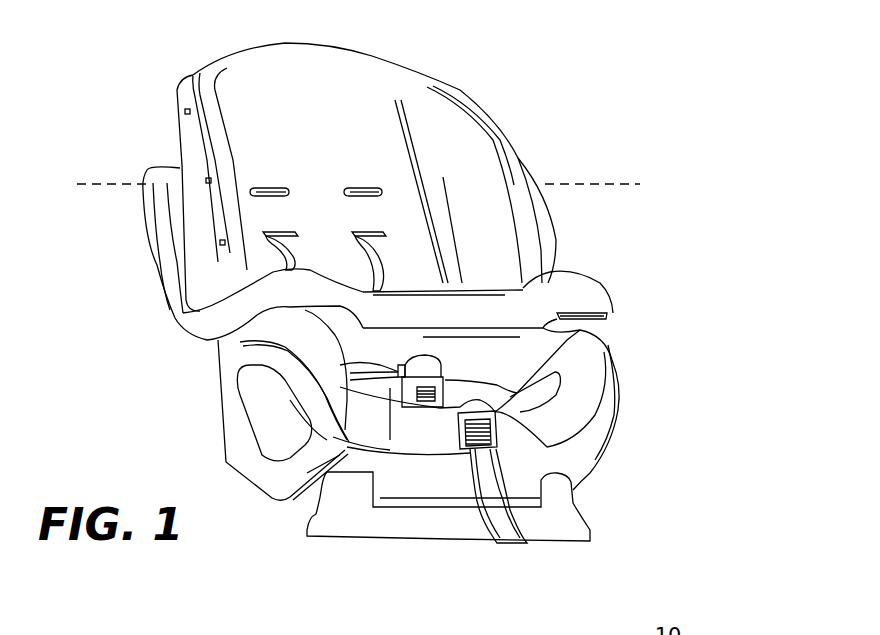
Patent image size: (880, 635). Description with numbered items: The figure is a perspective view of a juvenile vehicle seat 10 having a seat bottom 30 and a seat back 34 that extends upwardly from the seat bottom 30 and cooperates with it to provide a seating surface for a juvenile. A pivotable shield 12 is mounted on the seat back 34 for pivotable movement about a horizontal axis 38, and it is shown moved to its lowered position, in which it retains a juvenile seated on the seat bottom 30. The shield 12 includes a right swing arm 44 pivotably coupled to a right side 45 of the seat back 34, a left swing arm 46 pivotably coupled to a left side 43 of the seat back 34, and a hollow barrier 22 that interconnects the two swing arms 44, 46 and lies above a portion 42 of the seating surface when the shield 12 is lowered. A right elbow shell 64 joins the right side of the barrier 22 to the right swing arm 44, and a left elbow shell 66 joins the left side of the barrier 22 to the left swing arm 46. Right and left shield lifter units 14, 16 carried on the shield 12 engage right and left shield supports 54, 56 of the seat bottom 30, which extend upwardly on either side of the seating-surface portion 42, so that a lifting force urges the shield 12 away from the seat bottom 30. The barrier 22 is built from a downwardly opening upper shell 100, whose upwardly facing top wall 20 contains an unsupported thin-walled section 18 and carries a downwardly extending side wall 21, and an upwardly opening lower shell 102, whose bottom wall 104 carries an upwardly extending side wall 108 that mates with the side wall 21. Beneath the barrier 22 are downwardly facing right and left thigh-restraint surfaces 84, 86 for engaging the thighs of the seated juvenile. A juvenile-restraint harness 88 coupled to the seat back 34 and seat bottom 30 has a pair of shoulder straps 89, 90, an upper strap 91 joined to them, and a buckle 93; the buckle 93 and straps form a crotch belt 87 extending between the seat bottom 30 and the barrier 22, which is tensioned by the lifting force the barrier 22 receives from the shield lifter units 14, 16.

The juvenile vehicle seat 10 is at (630, 98).
The pivotable shield 12 is at (162, 325).
The right shield lifter unit 14 is at (279, 325).
The left shield lifter unit 16 is at (546, 353).
The unsupported thin-walled section 18 is at (433, 290).
The top wall 20 is at (467, 289).
The downwardly extending side wall 21 is at (393, 321).
The hollow barrier 22 is at (502, 305).
The seat bottom 30 is at (618, 418).
The seat back 34 is at (478, 96).
The axis 38 is at (596, 184).
The portion of the seating surface 42 is at (493, 405).
The left side of seat back 43 is at (514, 153).
The right swing arm 44 is at (165, 270).
The right side of seat back 45 is at (184, 165).
The left swing arm 46 is at (552, 245).
The right shield support 54 is at (295, 348).
The left shield support 56 is at (622, 357).
The right elbow shell 64 is at (257, 268).
The left elbow shell 66 is at (577, 297).
The right thigh-restraint surface 84 is at (376, 364).
The left thigh-restraint surface 86 is at (494, 364).
The crotch belt 87 is at (343, 382).
The juvenile-restraint harness 88 is at (394, 229).
The shoulder strap 89 is at (310, 250).
The shoulder strap 90 is at (378, 250).
The upper strap 91 is at (430, 370).
The buckle 93 is at (427, 400).
The upper shell 100 is at (525, 309).
The lower shell 102 is at (614, 378).
The bottom wall 104 is at (258, 480).
The upwardly extending side wall 108 is at (405, 342).